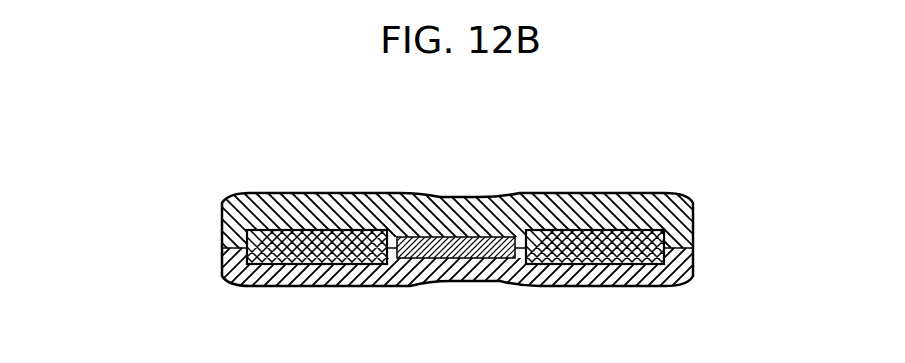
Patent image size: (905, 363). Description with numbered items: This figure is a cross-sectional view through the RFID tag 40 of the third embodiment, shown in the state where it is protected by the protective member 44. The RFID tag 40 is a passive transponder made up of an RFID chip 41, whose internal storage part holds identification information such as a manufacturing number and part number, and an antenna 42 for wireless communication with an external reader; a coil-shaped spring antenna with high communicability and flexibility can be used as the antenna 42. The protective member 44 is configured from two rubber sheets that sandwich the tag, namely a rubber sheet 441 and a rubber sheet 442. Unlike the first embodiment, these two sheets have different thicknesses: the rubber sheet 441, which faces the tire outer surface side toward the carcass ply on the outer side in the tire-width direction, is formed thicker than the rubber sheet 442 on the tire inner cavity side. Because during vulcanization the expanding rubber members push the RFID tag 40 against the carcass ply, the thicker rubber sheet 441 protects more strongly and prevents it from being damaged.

The RFID tag 40 is at (472, 183).
The RFID chip 41 is at (468, 240).
The antenna 42 is at (357, 230).
The protective member 44 is at (416, 245).
The rubber sheet 441 is at (226, 218).
The rubber sheet 442 is at (437, 269).